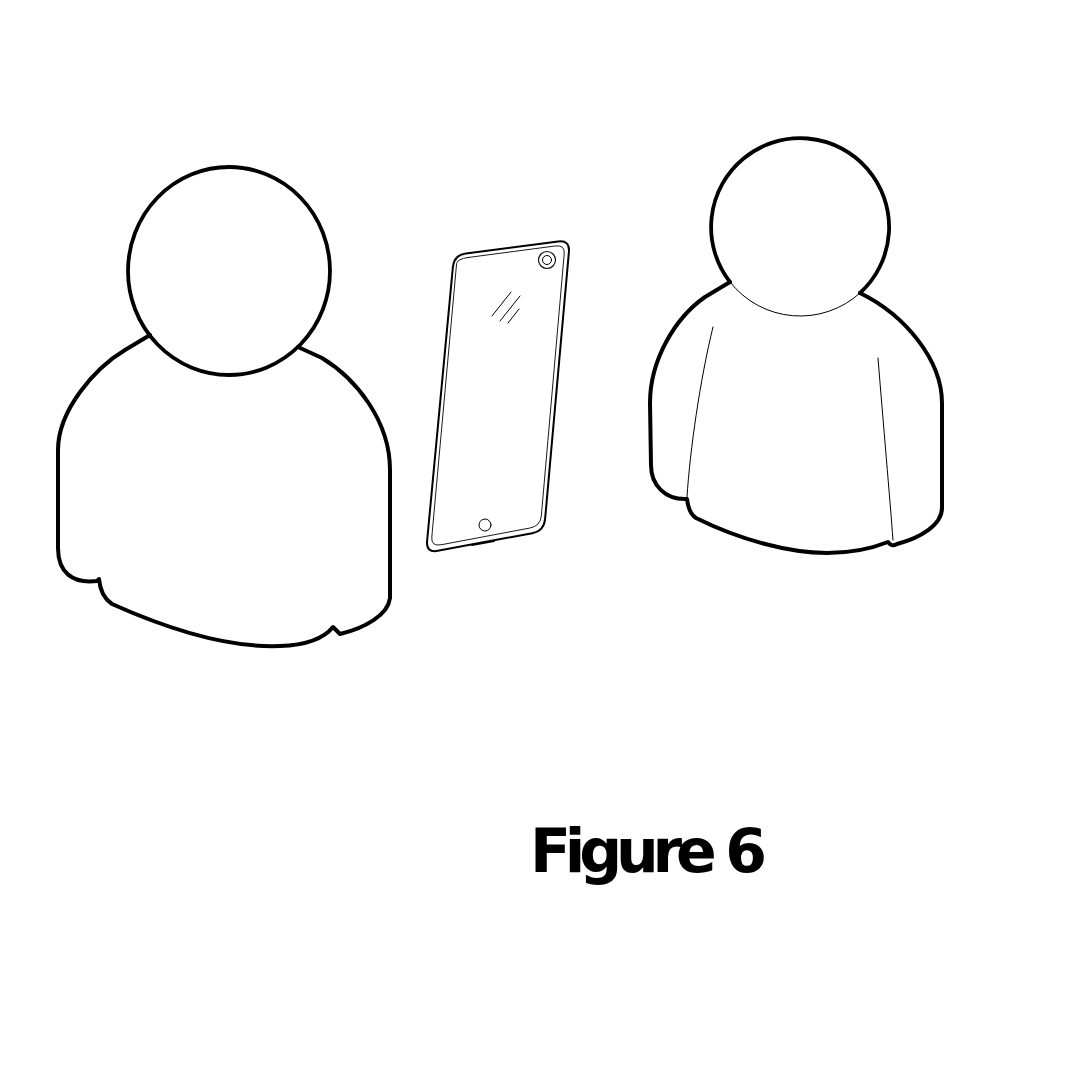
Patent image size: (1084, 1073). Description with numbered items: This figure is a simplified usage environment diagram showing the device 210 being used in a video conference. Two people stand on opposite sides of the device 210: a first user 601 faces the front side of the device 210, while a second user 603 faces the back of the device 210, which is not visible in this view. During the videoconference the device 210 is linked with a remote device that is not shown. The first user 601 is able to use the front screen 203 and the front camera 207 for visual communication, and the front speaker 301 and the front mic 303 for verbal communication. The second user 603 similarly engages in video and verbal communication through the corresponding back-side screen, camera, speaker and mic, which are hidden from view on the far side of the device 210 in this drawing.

The first user 601 is at (233, 183).
The second user 603 is at (797, 153).
The device 210 is at (536, 393).
The front screen 203 is at (508, 343).
The front camera 207 is at (547, 263).
The front speaker 301 is at (478, 527).
The front mic 303 is at (483, 545).